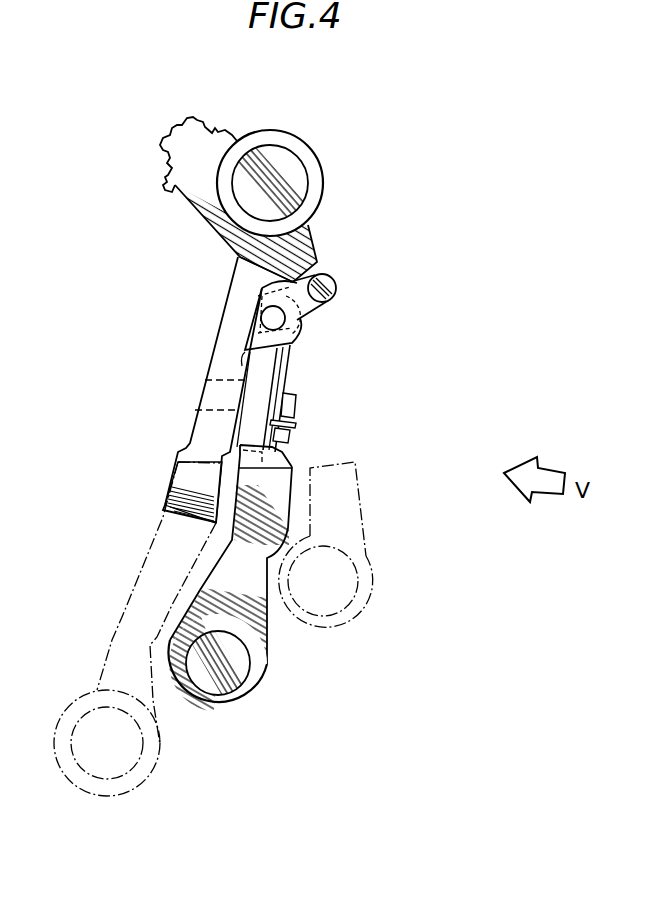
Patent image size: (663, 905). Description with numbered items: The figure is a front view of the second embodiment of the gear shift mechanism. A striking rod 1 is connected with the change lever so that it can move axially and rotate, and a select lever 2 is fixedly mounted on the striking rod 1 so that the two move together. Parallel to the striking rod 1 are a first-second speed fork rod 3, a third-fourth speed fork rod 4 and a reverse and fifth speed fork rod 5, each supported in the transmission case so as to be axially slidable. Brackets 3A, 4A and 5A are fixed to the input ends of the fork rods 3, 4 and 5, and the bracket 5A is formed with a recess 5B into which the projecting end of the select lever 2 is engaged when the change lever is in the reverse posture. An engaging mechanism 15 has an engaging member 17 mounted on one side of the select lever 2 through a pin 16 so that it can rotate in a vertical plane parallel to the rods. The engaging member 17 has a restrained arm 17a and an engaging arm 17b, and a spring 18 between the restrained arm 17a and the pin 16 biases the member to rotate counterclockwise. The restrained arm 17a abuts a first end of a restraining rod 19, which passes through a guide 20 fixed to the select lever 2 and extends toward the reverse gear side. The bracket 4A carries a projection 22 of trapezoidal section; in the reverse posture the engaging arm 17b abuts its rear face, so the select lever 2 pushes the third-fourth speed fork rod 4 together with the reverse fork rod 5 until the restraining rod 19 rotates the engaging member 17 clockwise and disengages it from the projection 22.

The striking rod 1 is at (297, 167).
The select lever 2 is at (193, 426).
The first-second speed fork rod 3 is at (347, 587).
The bracket 3A is at (366, 523).
The third-fourth speed fork rod 4 is at (238, 663).
The bracket 4A is at (283, 502).
The reverse and fifth speed fork rod 5 is at (133, 753).
The bracket 5A is at (138, 597).
The recess 5B is at (165, 508).
The engaging mechanism 15 is at (344, 303).
The pin 16 is at (297, 398).
The engaging member 17 is at (236, 377).
The restrained arm 17a is at (258, 291).
The engaging arm 17b is at (287, 433).
The spring 18 is at (288, 357).
The restraining rod 19 is at (332, 267).
The guide 20 is at (303, 325).
The projection 22 is at (287, 462).